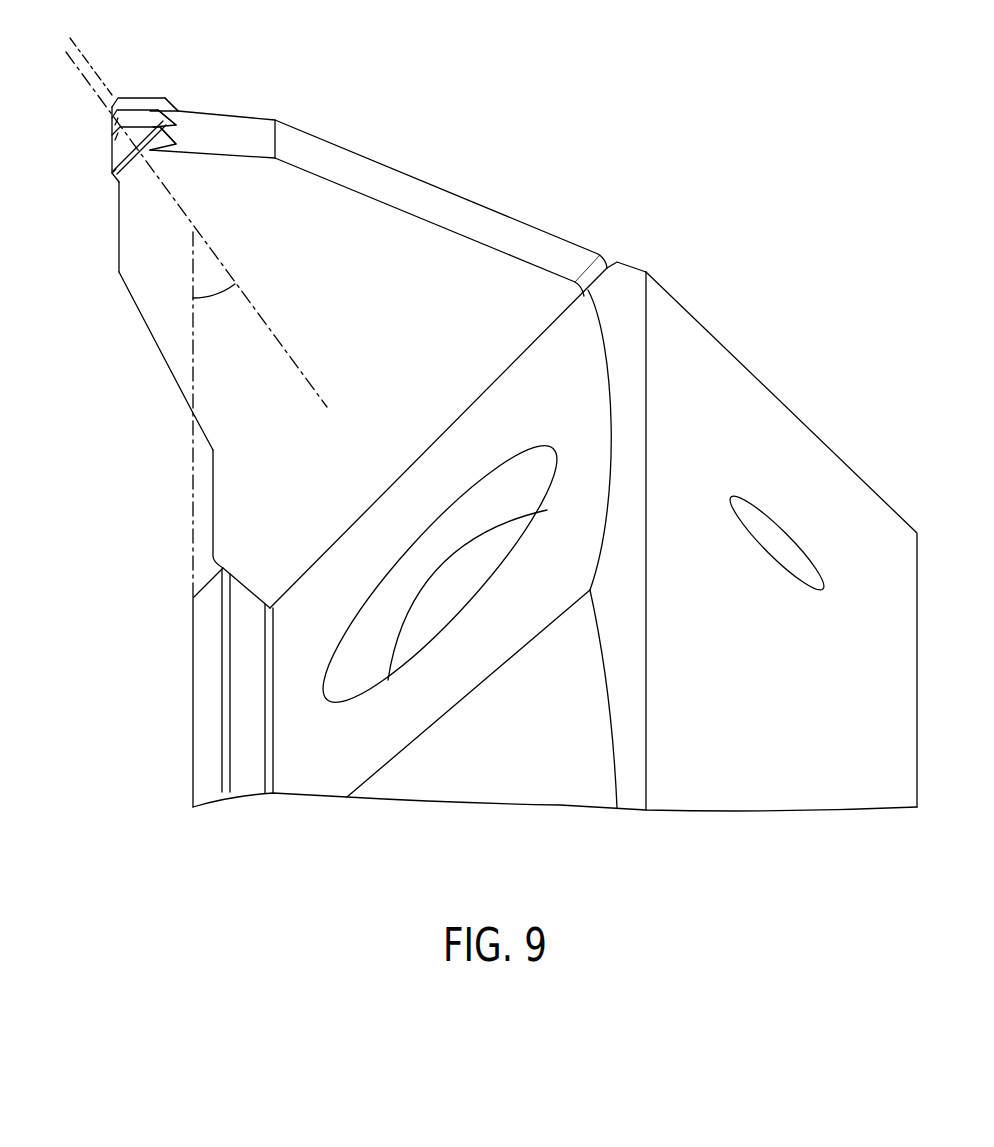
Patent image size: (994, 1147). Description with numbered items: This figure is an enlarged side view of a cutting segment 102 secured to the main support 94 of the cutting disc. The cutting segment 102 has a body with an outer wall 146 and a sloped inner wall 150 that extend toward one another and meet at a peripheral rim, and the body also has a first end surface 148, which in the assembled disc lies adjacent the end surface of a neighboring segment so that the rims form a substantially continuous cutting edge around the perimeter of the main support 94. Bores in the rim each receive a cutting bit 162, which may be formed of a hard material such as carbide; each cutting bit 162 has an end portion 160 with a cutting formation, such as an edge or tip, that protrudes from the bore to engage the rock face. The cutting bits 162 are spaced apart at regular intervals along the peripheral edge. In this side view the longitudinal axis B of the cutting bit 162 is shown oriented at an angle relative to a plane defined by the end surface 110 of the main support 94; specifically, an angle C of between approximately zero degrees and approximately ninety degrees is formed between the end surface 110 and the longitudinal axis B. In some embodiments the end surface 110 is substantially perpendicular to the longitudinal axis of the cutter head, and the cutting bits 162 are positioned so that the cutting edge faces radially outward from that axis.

The main support 94 is at (707, 292).
The cutting segment 102 is at (472, 423).
The end surface 110 is at (193, 706).
The outer wall 146 is at (343, 152).
The first end surface 148 is at (393, 251).
The sloped inner wall 150 is at (143, 317).
The end portion 160 is at (138, 117).
The cutting bit 162 is at (102, 108).
The longitudinal axis B is at (90, 53).
The angle C is at (214, 296).